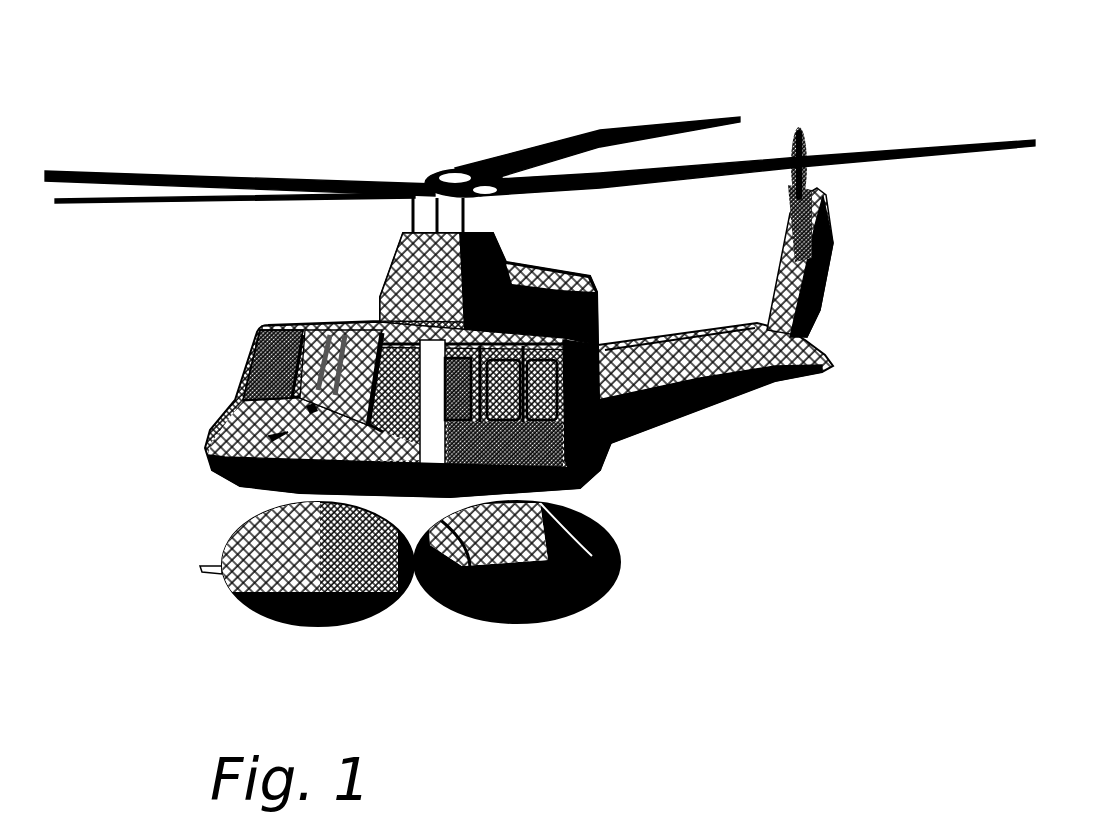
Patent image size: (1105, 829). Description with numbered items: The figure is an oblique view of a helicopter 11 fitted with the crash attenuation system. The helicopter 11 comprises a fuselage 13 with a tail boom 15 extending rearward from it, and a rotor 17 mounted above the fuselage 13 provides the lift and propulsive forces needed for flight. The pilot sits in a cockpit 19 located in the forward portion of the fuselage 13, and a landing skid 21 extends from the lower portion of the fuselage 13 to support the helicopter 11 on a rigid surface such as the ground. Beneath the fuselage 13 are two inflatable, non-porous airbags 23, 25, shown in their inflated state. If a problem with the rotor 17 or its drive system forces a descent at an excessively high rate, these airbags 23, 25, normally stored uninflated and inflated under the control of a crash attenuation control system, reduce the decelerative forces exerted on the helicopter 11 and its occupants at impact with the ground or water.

The helicopter 11 is at (124, 340).
The fuselage 13 is at (573, 480).
The tail boom 15 is at (710, 407).
The rotor 17 is at (515, 152).
The cockpit 19 is at (243, 400).
The landing skid 21 is at (360, 623).
The airbag 23 is at (387, 627).
The airbag 25 is at (550, 620).